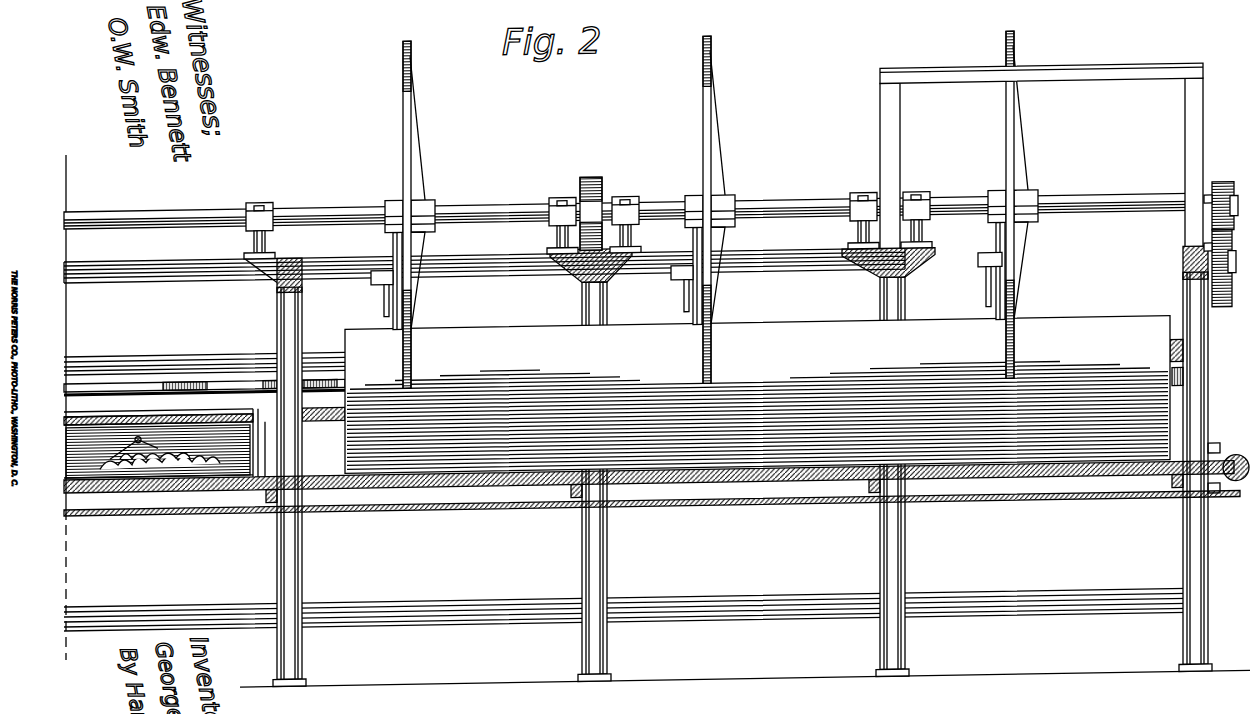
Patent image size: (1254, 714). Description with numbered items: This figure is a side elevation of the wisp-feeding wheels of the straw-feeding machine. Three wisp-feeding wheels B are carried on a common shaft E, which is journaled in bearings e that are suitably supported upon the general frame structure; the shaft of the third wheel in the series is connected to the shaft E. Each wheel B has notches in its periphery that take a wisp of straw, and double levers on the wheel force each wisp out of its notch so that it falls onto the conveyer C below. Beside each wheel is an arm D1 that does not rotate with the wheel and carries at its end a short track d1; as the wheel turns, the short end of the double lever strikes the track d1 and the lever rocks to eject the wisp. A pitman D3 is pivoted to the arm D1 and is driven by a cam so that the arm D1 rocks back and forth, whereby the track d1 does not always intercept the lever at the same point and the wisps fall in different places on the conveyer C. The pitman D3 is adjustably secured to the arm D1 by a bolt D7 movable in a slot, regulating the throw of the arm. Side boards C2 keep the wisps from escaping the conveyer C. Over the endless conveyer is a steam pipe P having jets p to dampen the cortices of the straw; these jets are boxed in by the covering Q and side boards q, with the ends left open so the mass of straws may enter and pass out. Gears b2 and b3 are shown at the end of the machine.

The shaft E is at (206, 213).
The bearing e is at (250, 207).
The wisp-feeding wheel B is at (408, 116).
The bolt D7 is at (984, 277).
The pitman D3 is at (990, 306).
The arm D1 is at (1038, 279).
The short track d1 is at (421, 333).
The jets p is at (137, 438).
The steam pipe P is at (139, 437).
The covering Q is at (220, 424).
The side boards q is at (245, 474).
The side board C2 is at (417, 460).
The conveyer C is at (490, 516).
The gear b2 is at (1223, 205).
The gear b3 is at (1230, 320).